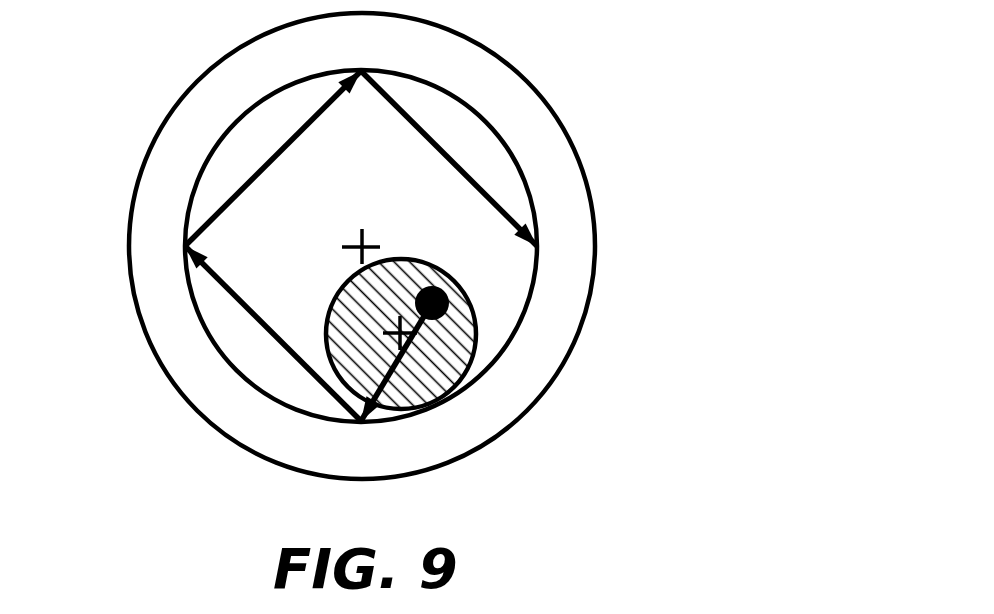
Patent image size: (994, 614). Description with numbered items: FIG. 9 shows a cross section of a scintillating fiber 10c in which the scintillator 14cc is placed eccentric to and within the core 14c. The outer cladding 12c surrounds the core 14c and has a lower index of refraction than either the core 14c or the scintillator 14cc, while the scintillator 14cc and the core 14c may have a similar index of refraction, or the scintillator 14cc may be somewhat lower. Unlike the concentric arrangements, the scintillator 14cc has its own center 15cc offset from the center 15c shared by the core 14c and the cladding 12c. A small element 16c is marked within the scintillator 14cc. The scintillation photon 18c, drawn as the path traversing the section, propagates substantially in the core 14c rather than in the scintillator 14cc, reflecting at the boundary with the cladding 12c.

The component assembly 10c is at (93, 77).
The cladding 12c is at (153, 183).
The core 14c is at (481, 146).
The scintillator 14cc is at (462, 382).
The center of core and cladding 15c is at (356, 243).
The center of conduit passage 15cc is at (397, 320).
The conduit 16c is at (442, 293).
The scintillation photon 18c is at (256, 312).